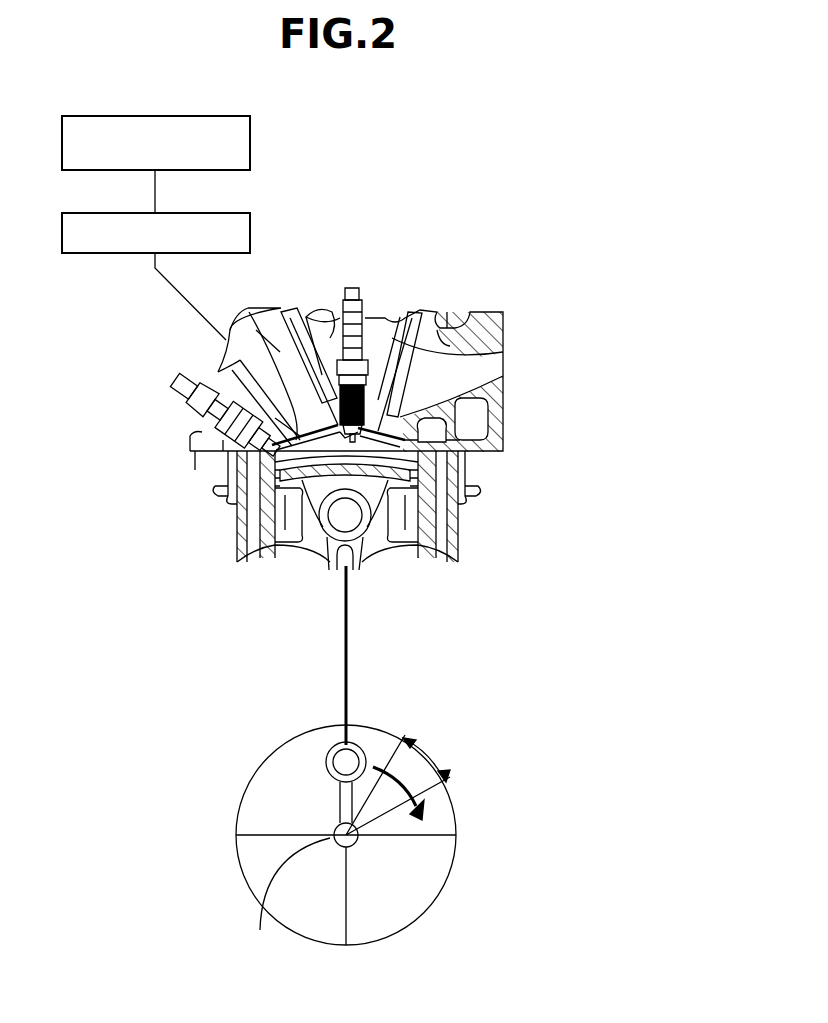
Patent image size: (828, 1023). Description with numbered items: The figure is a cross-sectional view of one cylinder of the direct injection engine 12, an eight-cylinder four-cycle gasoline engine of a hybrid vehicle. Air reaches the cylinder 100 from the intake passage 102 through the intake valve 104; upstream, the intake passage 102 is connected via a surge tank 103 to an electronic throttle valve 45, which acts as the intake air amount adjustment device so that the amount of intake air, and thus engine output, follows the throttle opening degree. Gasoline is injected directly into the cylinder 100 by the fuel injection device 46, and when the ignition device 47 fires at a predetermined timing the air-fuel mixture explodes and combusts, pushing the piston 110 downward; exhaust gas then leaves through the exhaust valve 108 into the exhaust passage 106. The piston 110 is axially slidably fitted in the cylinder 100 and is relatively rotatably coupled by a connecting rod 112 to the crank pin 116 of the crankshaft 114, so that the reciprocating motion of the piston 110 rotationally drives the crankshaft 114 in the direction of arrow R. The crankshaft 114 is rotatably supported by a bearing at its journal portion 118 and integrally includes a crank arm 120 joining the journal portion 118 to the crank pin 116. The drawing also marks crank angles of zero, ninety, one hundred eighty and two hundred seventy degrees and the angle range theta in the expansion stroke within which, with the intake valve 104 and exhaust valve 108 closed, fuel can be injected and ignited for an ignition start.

The direct injection engine 12 is at (522, 265).
The electronic throttle valve 45 is at (232, 122).
The fuel injection device 46 is at (198, 400).
The ignition device 47 is at (380, 312).
The cylinder 100 is at (427, 523).
The intake passage 102 is at (242, 360).
The surge tank 103 is at (212, 218).
The intake valve 104 is at (250, 318).
The exhaust passage 106 is at (456, 370).
The exhaust valve 108 is at (466, 393).
The piston 110 is at (307, 490).
The connecting rod 112 is at (348, 651).
The crankshaft 114 is at (362, 855).
The crank pin 116 is at (338, 762).
The journal portion 118 is at (285, 900).
The crank arm 120 is at (340, 800).